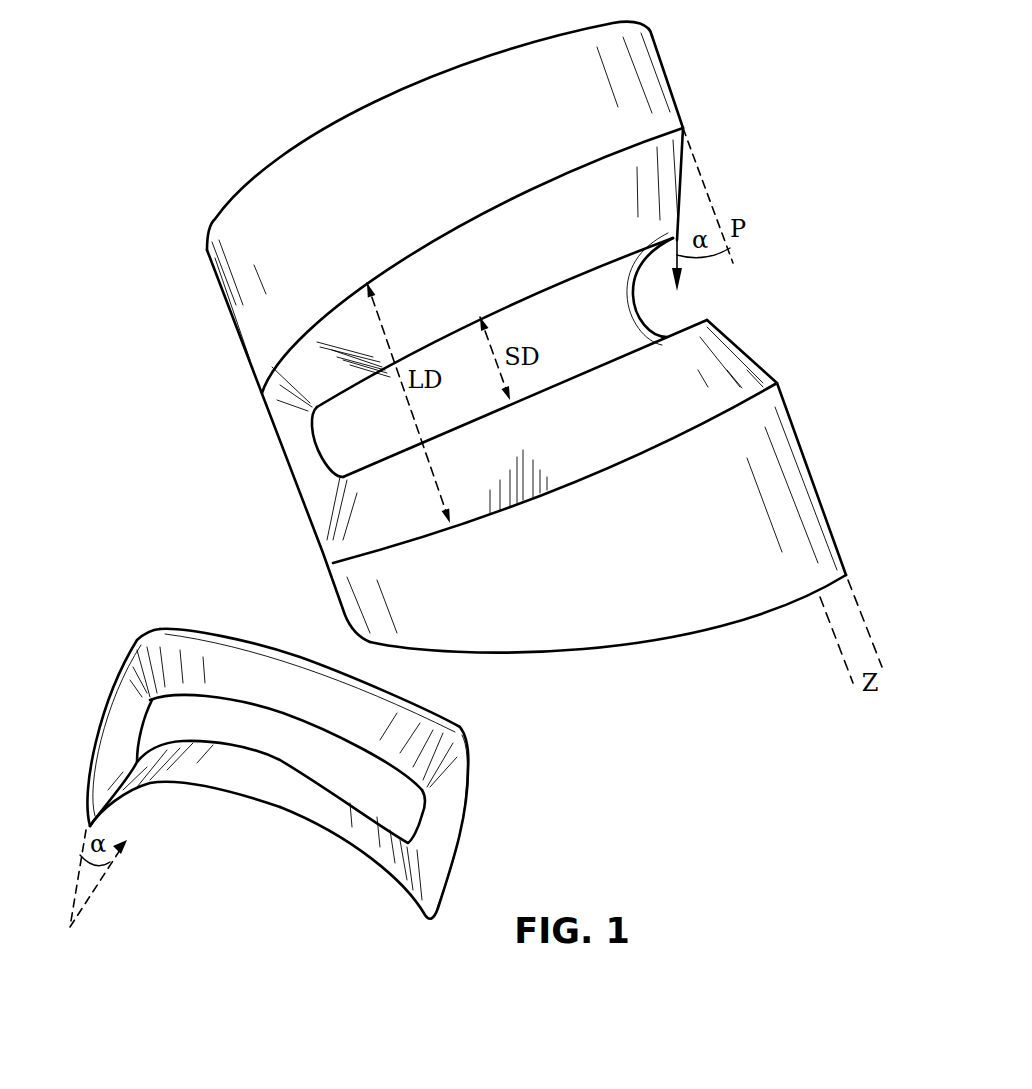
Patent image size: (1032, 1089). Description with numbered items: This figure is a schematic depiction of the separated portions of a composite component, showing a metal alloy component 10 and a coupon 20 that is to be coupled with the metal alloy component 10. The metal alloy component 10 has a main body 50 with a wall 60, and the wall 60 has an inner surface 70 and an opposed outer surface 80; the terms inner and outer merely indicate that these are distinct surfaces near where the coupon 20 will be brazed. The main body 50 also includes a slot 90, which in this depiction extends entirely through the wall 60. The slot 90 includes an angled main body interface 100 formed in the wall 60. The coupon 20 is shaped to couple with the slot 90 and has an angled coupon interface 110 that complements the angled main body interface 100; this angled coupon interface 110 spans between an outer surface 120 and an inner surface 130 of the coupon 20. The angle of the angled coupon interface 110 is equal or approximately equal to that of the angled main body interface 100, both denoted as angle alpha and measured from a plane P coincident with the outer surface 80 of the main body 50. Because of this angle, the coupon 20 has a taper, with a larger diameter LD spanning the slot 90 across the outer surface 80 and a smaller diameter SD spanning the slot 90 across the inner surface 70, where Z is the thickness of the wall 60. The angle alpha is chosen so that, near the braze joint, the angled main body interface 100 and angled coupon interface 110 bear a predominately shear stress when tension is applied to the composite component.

The metal alloy component 10 is at (524, 352).
The coupon 20 is at (269, 731).
The main body 50 is at (243, 290).
The wall 60 is at (380, 133).
The inner surface 70 is at (337, 438).
The outer surface 80 is at (451, 166).
The slot 90 is at (519, 308).
The angled main body interface 100 is at (425, 284).
The angled coupon interface 110 is at (327, 716).
The outer surface 120 is at (148, 640).
The inner surface 130 is at (273, 754).